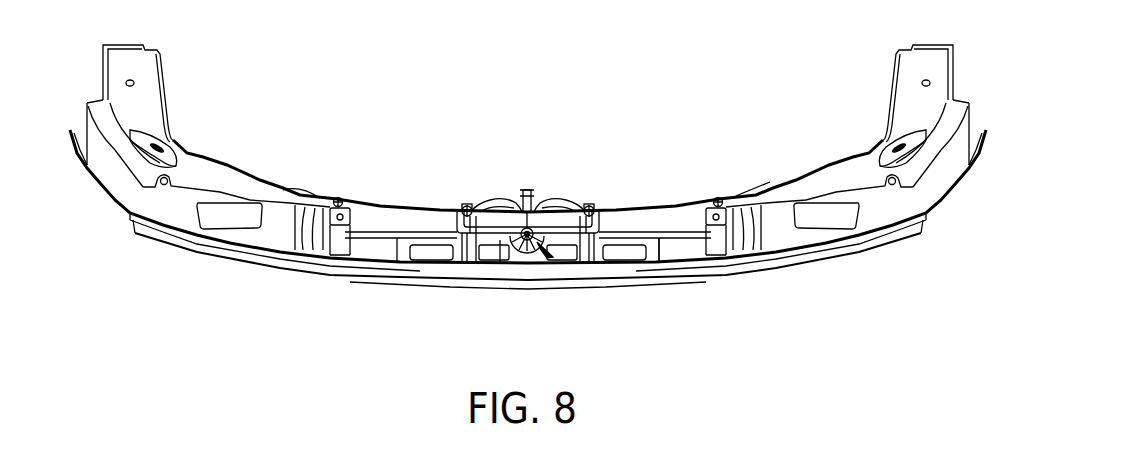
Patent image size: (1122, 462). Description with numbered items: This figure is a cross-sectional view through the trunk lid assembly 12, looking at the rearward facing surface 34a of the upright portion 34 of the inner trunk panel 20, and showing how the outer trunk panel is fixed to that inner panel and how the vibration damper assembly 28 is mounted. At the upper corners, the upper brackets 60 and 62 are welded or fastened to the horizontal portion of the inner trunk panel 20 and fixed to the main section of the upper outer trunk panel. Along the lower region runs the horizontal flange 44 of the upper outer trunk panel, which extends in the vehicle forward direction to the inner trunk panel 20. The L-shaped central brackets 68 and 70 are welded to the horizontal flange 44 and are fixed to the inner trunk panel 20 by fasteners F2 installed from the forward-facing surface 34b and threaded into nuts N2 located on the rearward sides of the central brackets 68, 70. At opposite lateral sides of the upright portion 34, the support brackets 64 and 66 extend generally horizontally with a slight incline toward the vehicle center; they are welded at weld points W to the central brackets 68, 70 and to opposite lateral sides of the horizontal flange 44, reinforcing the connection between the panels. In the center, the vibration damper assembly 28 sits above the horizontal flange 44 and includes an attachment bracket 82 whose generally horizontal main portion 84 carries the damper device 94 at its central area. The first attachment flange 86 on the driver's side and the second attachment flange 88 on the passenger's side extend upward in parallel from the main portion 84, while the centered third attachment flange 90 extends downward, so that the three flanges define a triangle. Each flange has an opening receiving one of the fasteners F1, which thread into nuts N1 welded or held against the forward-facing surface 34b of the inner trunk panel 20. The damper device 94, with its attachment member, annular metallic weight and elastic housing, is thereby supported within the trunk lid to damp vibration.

The trunk lid assembly 12 is at (337, 92).
The inner trunk panel 20 is at (283, 190).
The vibration damper assembly 28 is at (549, 252).
The upright portion 34 is at (313, 195).
The rearward facing surface 34a is at (668, 222).
The forward-facing surface 34b is at (738, 200).
The horizontal flange 44 is at (590, 240).
The upper bracket 60 is at (143, 71).
The upper bracket 62 is at (912, 68).
The support bracket 64 is at (222, 218).
The support bracket 66 is at (818, 222).
The central bracket 68 is at (351, 211).
The central bracket 70 is at (705, 212).
The attachment bracket 82 is at (473, 236).
The main portion 84 is at (500, 240).
The first attachment flange 86 is at (472, 216).
The second attachment flange 88 is at (590, 216).
The third attachment flange 90 is at (532, 196).
The damper device 94 is at (530, 242).
The fastener F1 is at (463, 208).
The fastener F2 is at (339, 198).
The nut N1 is at (469, 207).
The nut N2 is at (322, 210).
The weld point W is at (336, 221).